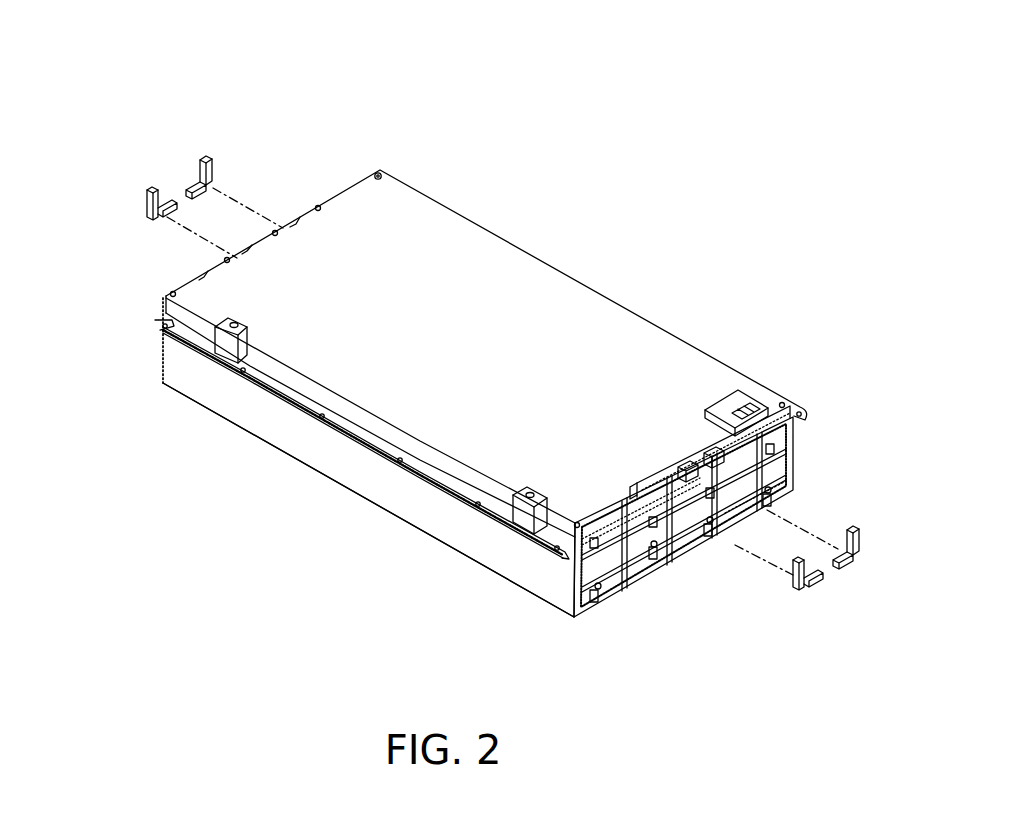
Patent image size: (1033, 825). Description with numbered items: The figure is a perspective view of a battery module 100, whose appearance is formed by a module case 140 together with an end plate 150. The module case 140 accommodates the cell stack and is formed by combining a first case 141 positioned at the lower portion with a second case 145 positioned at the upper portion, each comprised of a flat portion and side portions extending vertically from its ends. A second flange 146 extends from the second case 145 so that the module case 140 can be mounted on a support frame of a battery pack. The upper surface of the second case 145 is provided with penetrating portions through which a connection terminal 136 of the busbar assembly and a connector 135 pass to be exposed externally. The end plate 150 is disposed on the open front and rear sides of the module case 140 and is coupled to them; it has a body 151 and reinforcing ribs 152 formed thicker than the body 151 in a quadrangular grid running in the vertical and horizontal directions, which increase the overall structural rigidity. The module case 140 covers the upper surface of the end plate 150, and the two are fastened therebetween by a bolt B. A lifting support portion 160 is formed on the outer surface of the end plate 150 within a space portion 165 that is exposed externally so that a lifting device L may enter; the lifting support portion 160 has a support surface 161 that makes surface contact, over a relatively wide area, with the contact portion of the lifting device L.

The battery module 100 is at (189, 38).
The bolt B is at (378, 172).
The lifting device L is at (214, 166).
The module case 140 is at (96, 270).
The second case 145 is at (206, 276).
The first case 141 is at (182, 369).
The connection terminal 136 is at (228, 346).
The second flange 146 is at (362, 447).
The lifting support portion 160 is at (668, 245).
The support surface 161 is at (653, 485).
The space portion 165 is at (707, 462).
The connector 135 is at (742, 402).
The end plate 150 is at (686, 568).
The body 151 is at (778, 459).
The reinforcing rib 152 is at (629, 560).